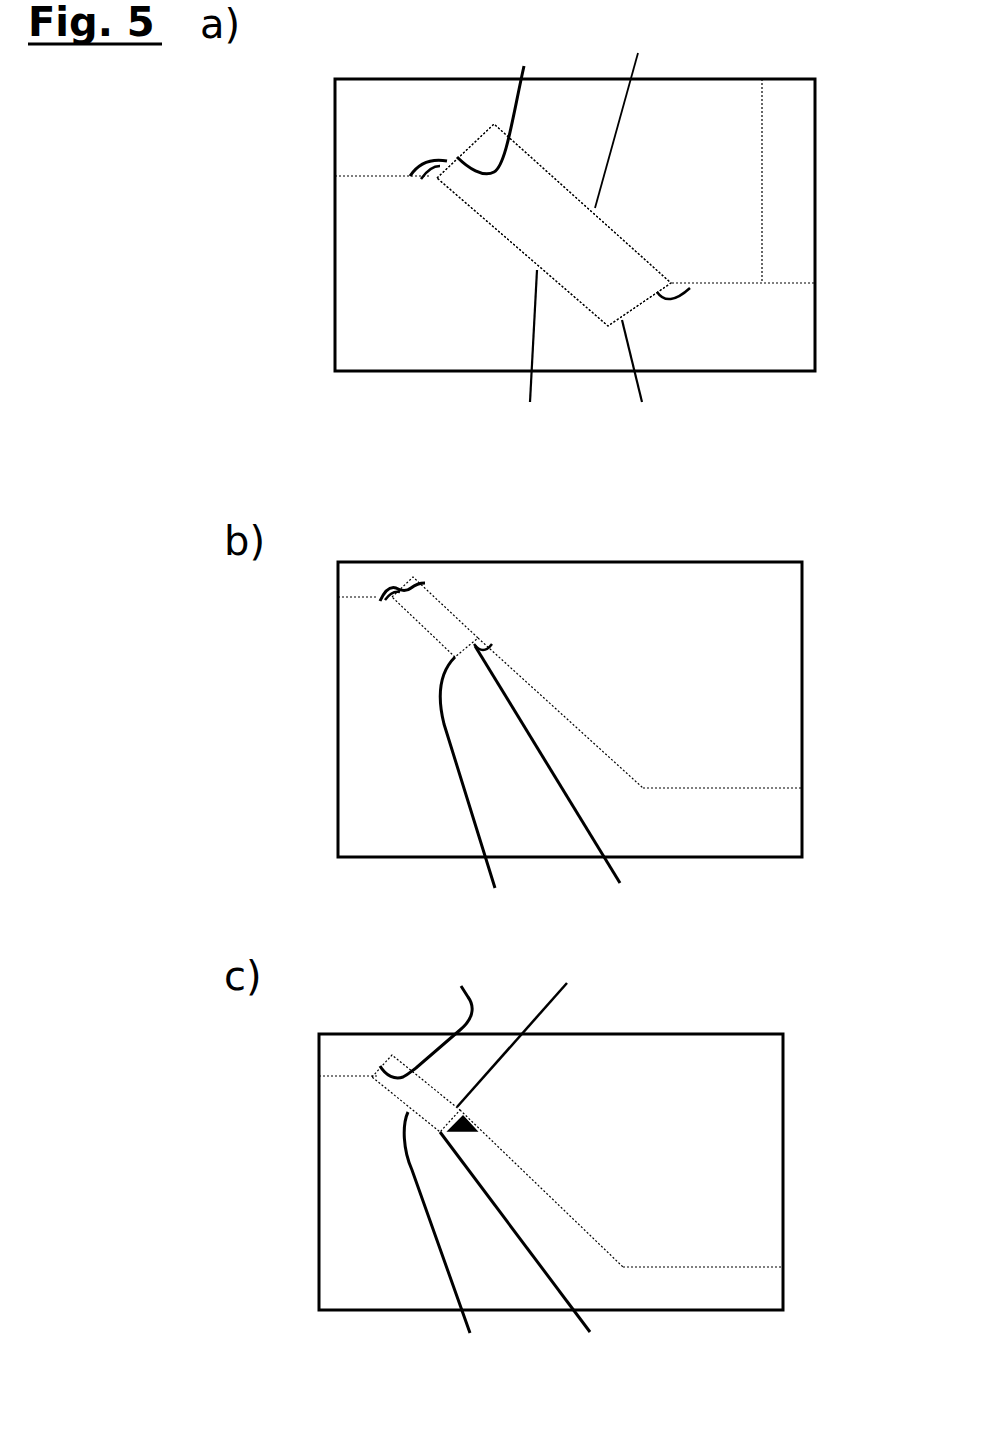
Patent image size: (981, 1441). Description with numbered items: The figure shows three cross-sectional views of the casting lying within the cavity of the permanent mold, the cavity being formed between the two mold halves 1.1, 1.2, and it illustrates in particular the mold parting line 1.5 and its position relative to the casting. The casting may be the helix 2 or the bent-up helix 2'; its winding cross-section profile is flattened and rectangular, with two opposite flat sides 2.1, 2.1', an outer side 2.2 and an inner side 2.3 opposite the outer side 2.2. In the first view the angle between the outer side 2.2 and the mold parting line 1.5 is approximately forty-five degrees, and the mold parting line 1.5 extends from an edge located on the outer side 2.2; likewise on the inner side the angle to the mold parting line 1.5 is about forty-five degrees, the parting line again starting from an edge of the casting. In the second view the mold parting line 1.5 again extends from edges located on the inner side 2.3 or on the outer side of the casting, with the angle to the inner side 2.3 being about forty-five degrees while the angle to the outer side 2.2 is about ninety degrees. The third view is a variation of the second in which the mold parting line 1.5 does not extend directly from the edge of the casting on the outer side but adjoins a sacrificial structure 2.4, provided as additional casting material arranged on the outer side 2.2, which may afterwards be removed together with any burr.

The mold half 1.1 is at (432, 319).
The mold half 1.2 is at (665, 236).
The mold parting line 1.5 is at (386, 176).
The helix 2 is at (521, 577).
The bent-up helix 2' is at (554, 225).
The flat side 2.1 is at (564, 566).
The flat side 2.1' is at (480, 819).
The outer side 2.2 is at (554, 844).
The inner side 2.3 is at (425, 583).
The sacrificial structure 2.4 is at (477, 1120).